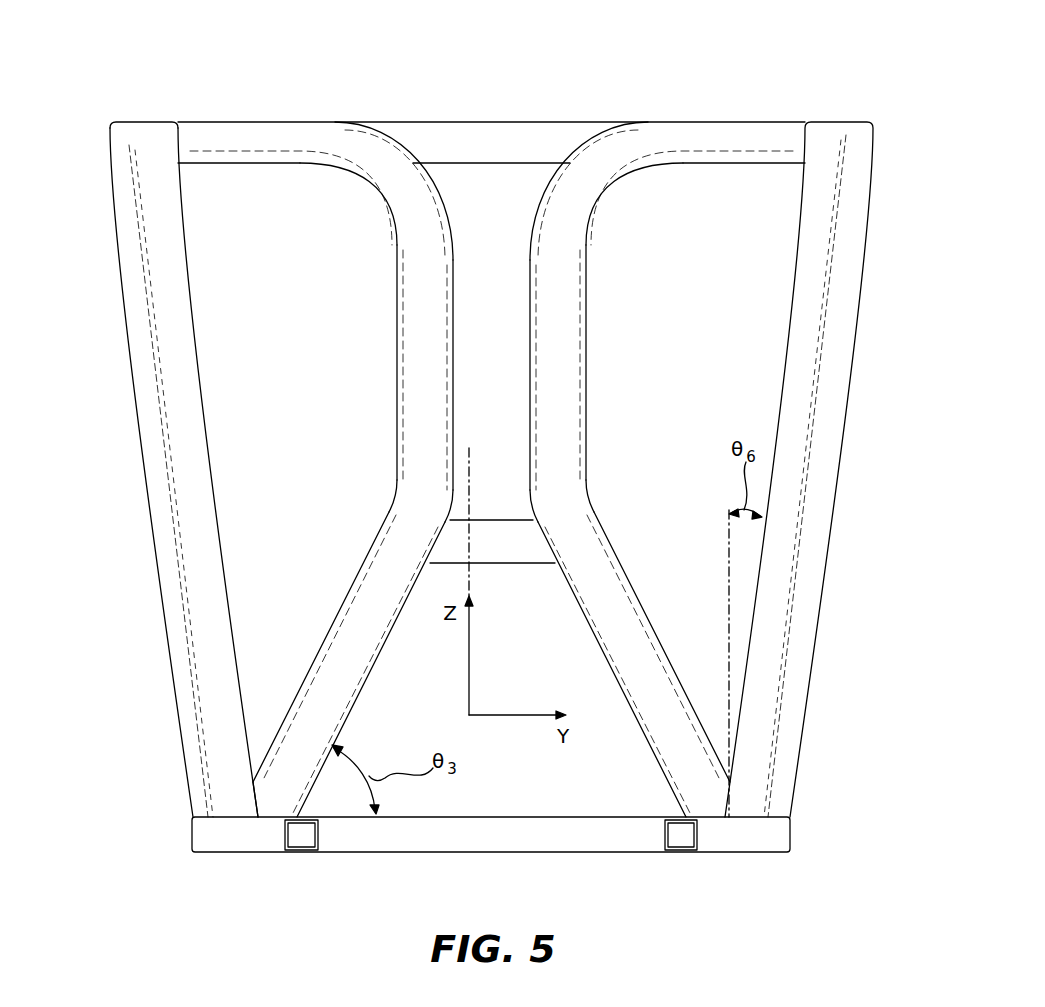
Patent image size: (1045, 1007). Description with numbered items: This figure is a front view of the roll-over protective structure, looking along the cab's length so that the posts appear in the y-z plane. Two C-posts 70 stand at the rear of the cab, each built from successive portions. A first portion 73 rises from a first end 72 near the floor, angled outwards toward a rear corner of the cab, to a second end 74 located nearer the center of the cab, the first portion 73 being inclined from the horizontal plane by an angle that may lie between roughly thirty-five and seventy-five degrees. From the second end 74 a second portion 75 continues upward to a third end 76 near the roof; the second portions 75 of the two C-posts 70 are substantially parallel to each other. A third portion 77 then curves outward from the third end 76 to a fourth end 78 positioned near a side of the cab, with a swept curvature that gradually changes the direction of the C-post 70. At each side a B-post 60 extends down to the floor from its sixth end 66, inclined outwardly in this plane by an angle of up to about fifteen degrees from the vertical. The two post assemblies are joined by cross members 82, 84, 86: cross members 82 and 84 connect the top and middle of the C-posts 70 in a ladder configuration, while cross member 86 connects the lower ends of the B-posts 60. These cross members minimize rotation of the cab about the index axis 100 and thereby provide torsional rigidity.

The B-post 60 is at (473, 438).
The sixth end 66 is at (148, 257).
The C-post 70 is at (491, 501).
The first end 72 is at (270, 800).
The first portion 73 is at (347, 640).
The second end 74 is at (405, 530).
The second portion 75 is at (409, 365).
The third end 76 is at (411, 238).
The third portion 77 is at (491, 207).
The fourth end 78 is at (143, 130).
The cross member 82 is at (499, 152).
The cross member 84 is at (495, 555).
The cross member 86 is at (499, 845).
The index axis 100 is at (470, 463).